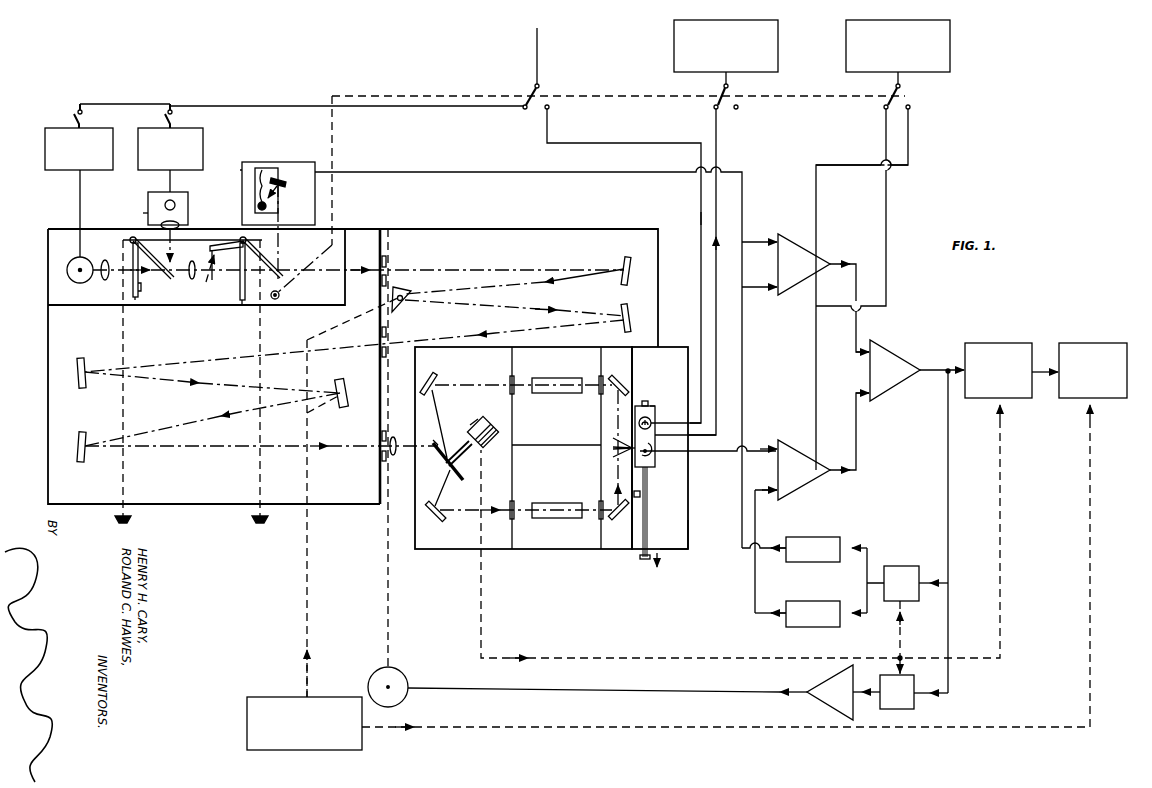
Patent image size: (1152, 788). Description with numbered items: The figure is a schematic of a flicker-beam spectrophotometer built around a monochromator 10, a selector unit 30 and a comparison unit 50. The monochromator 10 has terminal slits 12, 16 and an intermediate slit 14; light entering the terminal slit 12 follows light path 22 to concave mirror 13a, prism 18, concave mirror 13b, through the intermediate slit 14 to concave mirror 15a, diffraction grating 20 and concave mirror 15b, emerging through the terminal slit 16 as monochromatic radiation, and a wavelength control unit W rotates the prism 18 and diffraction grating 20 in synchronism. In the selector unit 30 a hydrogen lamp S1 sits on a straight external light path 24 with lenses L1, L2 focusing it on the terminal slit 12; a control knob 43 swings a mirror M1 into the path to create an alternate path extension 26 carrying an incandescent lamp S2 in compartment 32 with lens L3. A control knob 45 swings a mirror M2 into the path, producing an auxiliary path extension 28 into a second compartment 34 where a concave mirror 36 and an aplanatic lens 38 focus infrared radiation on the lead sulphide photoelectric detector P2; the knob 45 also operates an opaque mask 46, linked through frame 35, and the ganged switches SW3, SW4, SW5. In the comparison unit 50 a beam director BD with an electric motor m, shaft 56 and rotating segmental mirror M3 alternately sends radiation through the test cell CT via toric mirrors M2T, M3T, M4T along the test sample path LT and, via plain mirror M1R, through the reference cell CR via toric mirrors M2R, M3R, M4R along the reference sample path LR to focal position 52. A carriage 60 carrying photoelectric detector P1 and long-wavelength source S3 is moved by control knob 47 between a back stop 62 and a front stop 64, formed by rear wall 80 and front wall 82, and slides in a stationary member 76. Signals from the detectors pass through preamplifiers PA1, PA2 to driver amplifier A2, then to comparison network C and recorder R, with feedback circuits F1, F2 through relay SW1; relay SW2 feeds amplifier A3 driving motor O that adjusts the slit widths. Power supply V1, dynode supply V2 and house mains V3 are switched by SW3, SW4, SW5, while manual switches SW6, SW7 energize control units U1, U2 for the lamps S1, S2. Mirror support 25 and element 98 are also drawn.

The monochromator 10 is at (485, 261).
The terminal slit 12 is at (388, 262).
The concave mirror 13a is at (628, 256).
The concave mirror 13b is at (629, 312).
The intermediate slit 14 is at (380, 340).
The concave mirror 15a is at (88, 362).
The concave mirror 15b is at (87, 437).
The terminal slit 16 is at (380, 447).
The prism 18 is at (410, 290).
The diffraction grating 20 is at (344, 407).
The light path 22 is at (540, 272).
The external light path 24 is at (208, 256).
The mirror support 25 is at (133, 300).
The alternate path extension 26 is at (148, 214).
The auxiliary path extension 28 is at (280, 240).
The selector unit 30 is at (206, 303).
The side section or compartment 32 is at (188, 197).
The second side section or compartment 34 is at (242, 170).
The frame 35 is at (240, 304).
The concave mirror 36 is at (280, 180).
The aplanatic lens 38 is at (264, 168).
The control knob 43 is at (131, 518).
The control knob 45 is at (266, 519).
The opaque mask 46 is at (214, 280).
The control knob 47 is at (644, 560).
The comparison unit 50 is at (563, 547).
The focal position 52 is at (650, 456).
The shaft 56 is at (464, 460).
The carriage 60 is at (652, 406).
The back stop 62 is at (645, 401).
The front stop 64 is at (640, 494).
The stationary member 76 is at (688, 539).
The rear wall 80 is at (690, 347).
The front wall 82 is at (676, 556).
The shutter 98 is at (228, 244).
The hydrogen lamp S1 is at (67, 270).
The incandescent lamp S2 is at (164, 205).
The long-wavelength radiation source S3 is at (651, 420).
The lens L1 is at (105, 260).
The lens L2 is at (192, 261).
The lens L3 is at (180, 225).
The reference sample path LR is at (530, 380).
The test sample path LT is at (528, 506).
The reference cell CR is at (578, 378).
The test cell CT is at (578, 504).
The mirror M1 is at (142, 287).
The mirror M2 is at (283, 277).
The rotating segmental mirror M3 is at (440, 452).
The plain mirror M1R is at (447, 443).
The toric mirror M2R is at (446, 372).
The toric mirror M2T is at (433, 520).
The toric mirror M3R is at (620, 375).
The toric mirror M3T is at (618, 523).
The toric mirror M4R is at (614, 440).
The toric mirror M4T is at (614, 455).
The electric motor m is at (475, 424).
The beam director BD is at (492, 424).
The photoelectric detector P1 is at (655, 460).
The photoelectric detector P2 is at (272, 200).
The preamplifier PA1 is at (800, 442).
The preamplifier PA2 is at (804, 234).
The driver amplifier A2 is at (895, 350).
The amplifier A3 is at (828, 678).
The feedback circuit F1 is at (813, 549).
The feedback circuit F2 is at (813, 614).
The control unit U1 is at (45, 152).
The control unit U2 is at (138, 134).
The power supply V1 is at (950, 52).
The dynode supply V2 is at (778, 52).
The house mains V3 is at (545, 45).
The relay SW1 is at (904, 566).
The relay SW2 is at (914, 706).
The switch SW3 is at (902, 87).
The switch SW4 is at (730, 87).
The switch SW5 is at (540, 87).
The manually operated switch SW6 is at (74, 112).
The manually operated switch SW7 is at (165, 112).
The comparison network C is at (1000, 342).
The recorder R is at (1092, 342).
The wavelength control unit W is at (284, 697).
The motor O is at (404, 670).